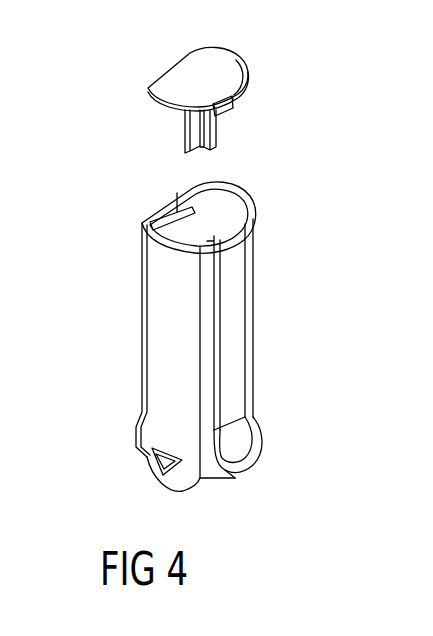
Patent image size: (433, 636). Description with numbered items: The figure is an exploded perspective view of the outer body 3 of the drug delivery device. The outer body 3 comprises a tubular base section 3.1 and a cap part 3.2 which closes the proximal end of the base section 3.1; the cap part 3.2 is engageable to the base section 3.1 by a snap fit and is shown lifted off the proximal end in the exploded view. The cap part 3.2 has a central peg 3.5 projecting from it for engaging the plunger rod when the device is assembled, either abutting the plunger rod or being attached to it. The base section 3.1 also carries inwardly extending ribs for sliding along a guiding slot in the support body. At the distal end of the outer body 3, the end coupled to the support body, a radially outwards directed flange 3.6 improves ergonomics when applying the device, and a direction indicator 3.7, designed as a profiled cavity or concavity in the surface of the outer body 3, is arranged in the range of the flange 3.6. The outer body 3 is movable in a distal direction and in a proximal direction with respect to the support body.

The outer body 3 is at (305, 28).
The tubular base section 3.1 is at (161, 347).
The cap part 3.2 is at (166, 83).
The central peg 3.5 is at (214, 129).
The flange 3.6 is at (245, 448).
The direction indicator 3.7 is at (151, 462).